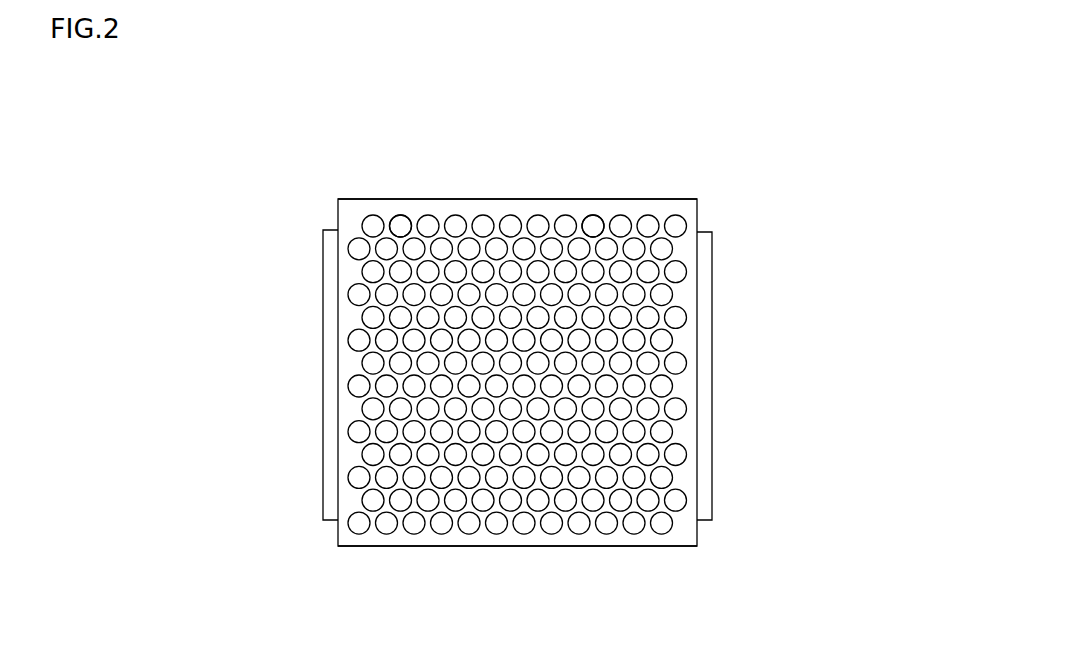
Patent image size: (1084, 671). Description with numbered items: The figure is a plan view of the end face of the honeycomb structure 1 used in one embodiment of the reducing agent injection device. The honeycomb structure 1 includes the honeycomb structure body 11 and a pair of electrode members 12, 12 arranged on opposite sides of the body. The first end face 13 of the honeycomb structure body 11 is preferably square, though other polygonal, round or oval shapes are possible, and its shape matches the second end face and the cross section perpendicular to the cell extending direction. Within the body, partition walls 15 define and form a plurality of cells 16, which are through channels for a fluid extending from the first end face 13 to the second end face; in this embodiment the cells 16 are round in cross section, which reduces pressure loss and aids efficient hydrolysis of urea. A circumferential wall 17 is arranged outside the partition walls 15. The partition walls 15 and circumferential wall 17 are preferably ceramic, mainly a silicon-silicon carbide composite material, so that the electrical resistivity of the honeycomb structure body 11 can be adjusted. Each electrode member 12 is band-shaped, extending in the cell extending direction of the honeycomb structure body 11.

The honeycomb structure 1 is at (762, 114).
The honeycomb structure body 11 is at (722, 210).
The electrode member 12 is at (300, 366).
The first end face 13 is at (510, 546).
The partition wall 15 is at (590, 222).
The cell 16 is at (394, 215).
The circumferential wall 17 is at (537, 199).